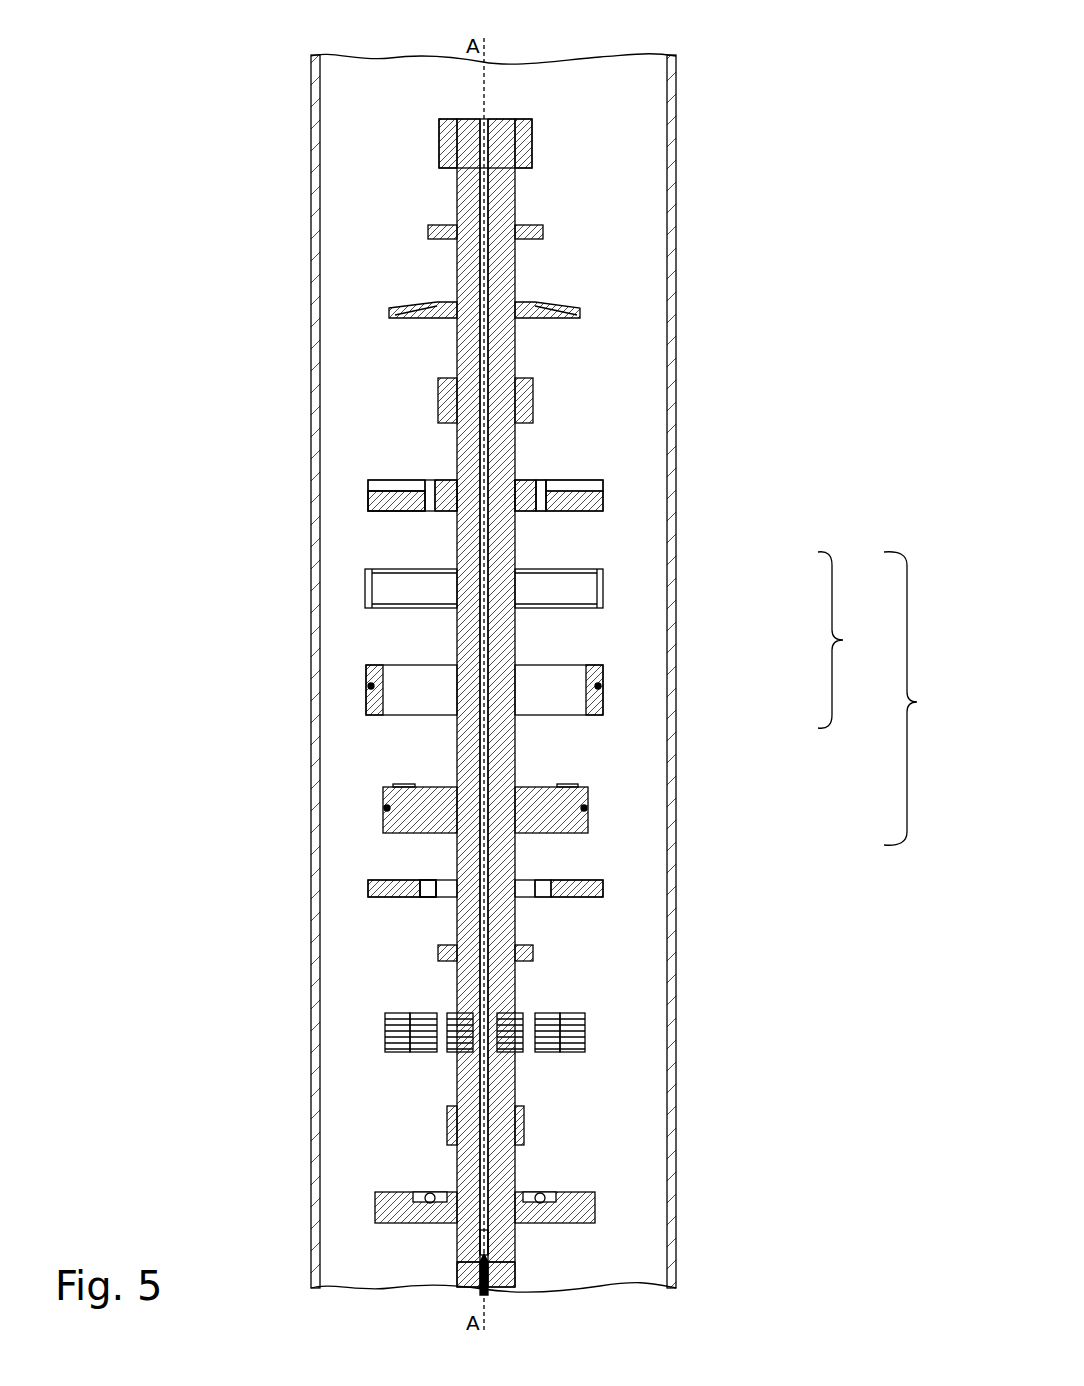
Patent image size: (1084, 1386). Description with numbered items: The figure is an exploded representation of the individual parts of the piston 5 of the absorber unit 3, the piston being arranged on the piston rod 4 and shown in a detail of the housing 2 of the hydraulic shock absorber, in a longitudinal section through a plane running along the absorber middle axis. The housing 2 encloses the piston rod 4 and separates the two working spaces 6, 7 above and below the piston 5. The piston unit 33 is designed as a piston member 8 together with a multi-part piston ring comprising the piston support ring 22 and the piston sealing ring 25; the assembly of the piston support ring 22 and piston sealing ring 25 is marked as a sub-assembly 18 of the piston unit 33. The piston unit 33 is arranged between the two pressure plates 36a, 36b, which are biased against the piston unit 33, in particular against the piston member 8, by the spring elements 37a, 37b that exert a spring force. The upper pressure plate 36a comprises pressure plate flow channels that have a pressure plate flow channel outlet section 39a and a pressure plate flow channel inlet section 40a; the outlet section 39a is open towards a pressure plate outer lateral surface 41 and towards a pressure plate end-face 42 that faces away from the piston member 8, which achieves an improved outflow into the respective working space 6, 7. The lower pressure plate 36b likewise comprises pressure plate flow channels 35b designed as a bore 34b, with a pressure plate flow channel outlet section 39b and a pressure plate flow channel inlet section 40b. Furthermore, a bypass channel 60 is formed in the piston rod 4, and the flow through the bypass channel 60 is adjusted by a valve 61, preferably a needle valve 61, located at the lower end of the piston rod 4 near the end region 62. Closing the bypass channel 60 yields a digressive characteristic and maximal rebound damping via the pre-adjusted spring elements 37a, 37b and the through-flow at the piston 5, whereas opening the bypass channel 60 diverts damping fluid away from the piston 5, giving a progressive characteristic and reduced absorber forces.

The housing 2 is at (678, 72).
The absorber unit 3 is at (138, 80).
The piston rod 4 is at (497, 195).
The piston 5 is at (48, 265).
The working space 6 is at (631, 109).
The working space 7 is at (641, 1267).
The piston member 8 is at (616, 816).
The bearing unit 18 is at (847, 640).
The piston support ring 22 is at (632, 692).
The piston sealing ring 25 is at (636, 588).
The piston unit 33 is at (920, 698).
The bore 34b is at (427, 900).
The pressure plate flow channels 35b is at (550, 902).
The pressure plate 36a is at (627, 490).
The pressure plate 36b is at (612, 891).
The spring element 37a is at (600, 310).
The spring element 37b is at (640, 1089).
The pressure plate flow channel outlet section 39a is at (572, 476).
The pressure plate flow channel outlet section 39b is at (430, 902).
The pressure plate flow channel inlet section 40a is at (549, 516).
The pressure plate flow channel inlet section 40b is at (427, 876).
The pressure plate outer lateral surface 41 is at (362, 494).
The pressure plate end-face 42 is at (389, 470).
The bypass channel 60 is at (486, 1237).
The needle valve 61 is at (490, 1292).
The shaft end 62 is at (476, 1282).